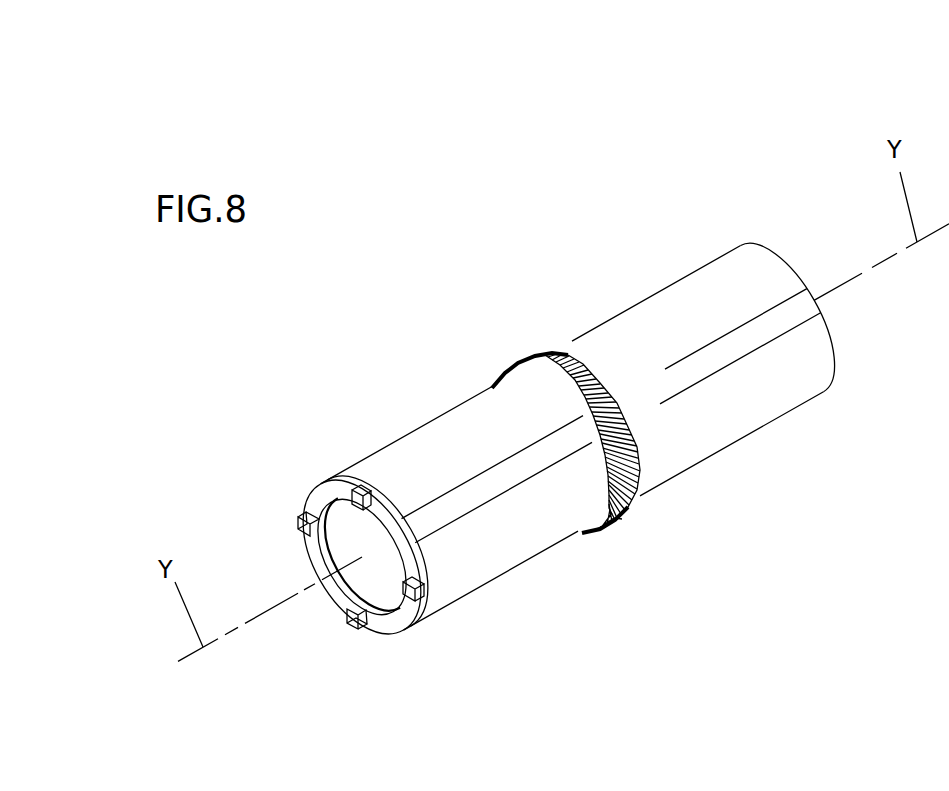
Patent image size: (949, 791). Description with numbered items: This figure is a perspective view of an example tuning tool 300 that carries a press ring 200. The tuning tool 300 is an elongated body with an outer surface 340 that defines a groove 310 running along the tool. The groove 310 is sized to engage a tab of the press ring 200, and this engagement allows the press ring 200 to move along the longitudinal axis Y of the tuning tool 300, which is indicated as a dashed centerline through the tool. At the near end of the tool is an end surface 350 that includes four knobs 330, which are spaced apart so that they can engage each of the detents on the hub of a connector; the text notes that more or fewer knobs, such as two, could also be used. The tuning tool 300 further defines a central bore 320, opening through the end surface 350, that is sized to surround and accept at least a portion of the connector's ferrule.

The tuning tool 300 is at (765, 170).
The groove 310 is at (725, 352).
The bore 320 is at (362, 560).
The knobs 330 is at (412, 596).
The outer surface 340 is at (424, 433).
The end surface 350 is at (318, 528).
The press ring 200 is at (620, 545).